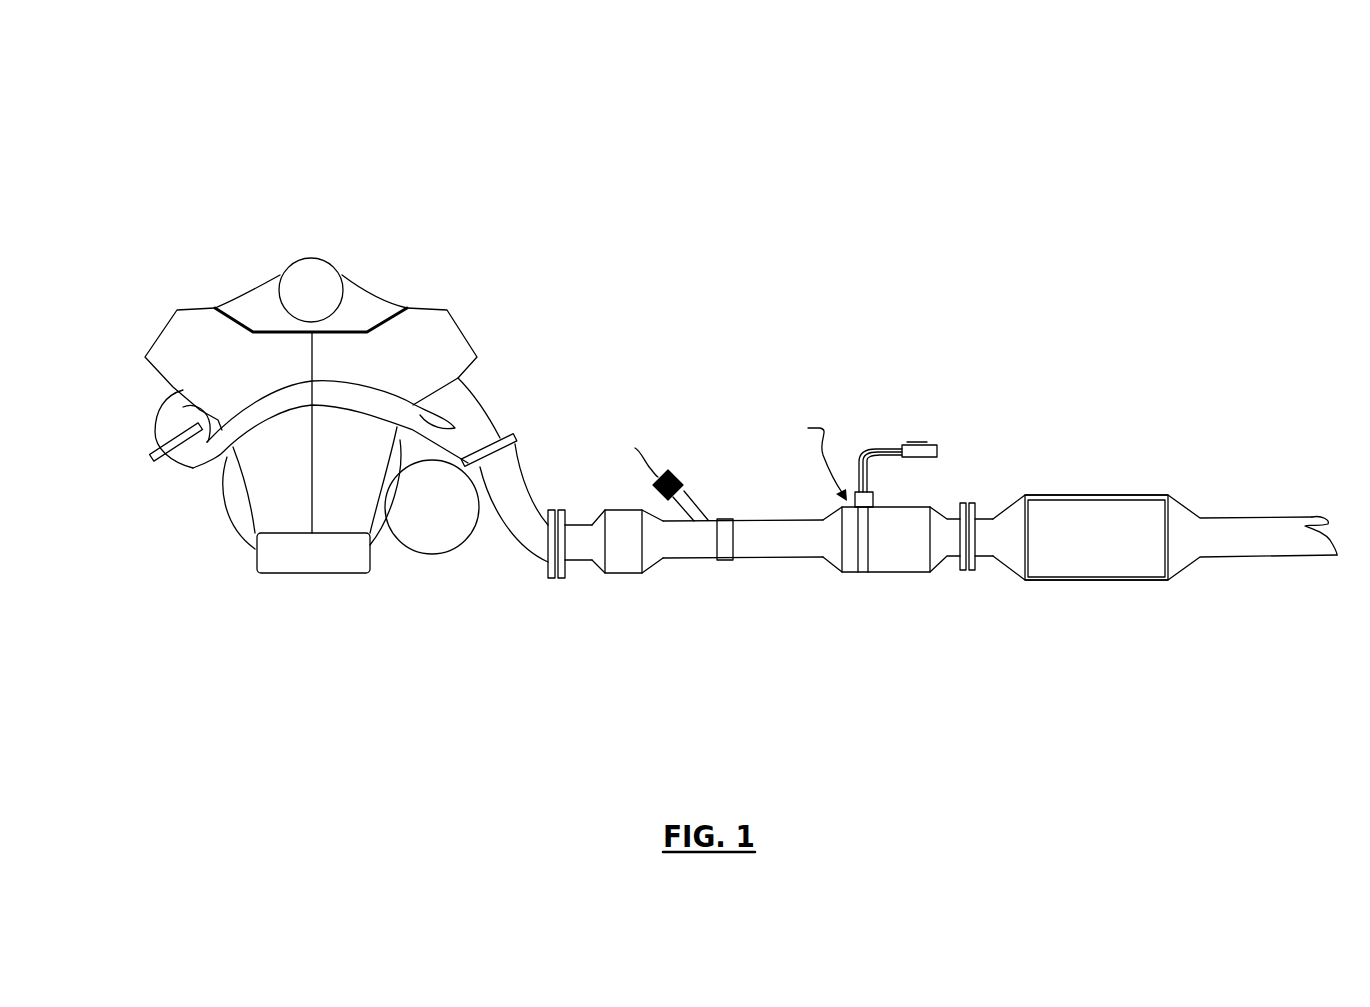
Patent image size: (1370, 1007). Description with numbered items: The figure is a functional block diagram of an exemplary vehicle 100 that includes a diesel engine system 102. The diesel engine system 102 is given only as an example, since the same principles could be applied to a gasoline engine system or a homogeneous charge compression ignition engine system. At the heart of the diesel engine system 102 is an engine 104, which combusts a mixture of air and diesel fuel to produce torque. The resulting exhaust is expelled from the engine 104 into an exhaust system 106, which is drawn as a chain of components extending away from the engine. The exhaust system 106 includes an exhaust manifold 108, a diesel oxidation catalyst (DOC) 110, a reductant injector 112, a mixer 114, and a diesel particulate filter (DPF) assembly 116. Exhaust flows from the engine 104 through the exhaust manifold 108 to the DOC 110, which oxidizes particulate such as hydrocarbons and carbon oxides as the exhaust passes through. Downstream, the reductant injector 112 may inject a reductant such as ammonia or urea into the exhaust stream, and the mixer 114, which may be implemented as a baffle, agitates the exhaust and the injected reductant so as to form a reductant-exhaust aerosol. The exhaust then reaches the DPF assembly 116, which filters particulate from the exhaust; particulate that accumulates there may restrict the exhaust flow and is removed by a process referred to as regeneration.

The vehicle 100 is at (240, 73).
The diesel engine system 102 is at (481, 259).
The engine 104 is at (473, 340).
The exhaust system 106 is at (861, 359).
The exhaust manifold 108 is at (501, 413).
The diesel oxidation catalyst 110 is at (604, 510).
The reductant injector 112 is at (684, 480).
The mixer 114 is at (725, 519).
The diesel particulate filter assembly 116 is at (937, 471).